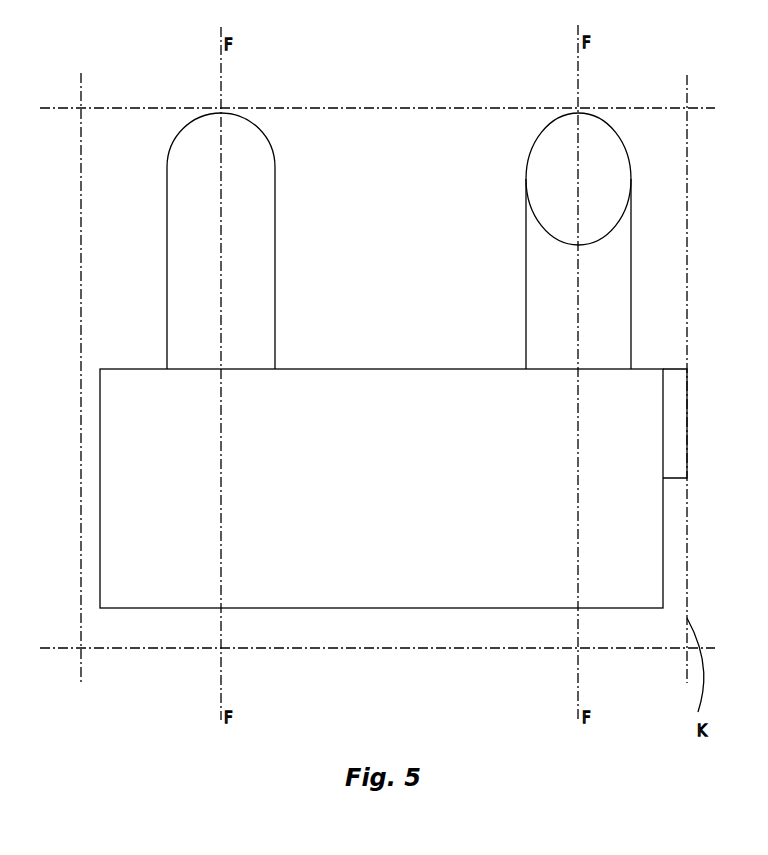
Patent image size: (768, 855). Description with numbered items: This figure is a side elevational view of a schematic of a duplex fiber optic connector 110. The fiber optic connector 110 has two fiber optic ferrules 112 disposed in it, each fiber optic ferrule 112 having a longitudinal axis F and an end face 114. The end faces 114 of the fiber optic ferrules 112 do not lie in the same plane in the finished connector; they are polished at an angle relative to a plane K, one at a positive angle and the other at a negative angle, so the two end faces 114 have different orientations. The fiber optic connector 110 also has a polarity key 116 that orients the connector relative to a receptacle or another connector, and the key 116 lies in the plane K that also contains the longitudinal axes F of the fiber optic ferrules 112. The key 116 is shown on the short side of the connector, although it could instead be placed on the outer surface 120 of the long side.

The fiber optic connector 110 is at (650, 145).
The fiber optic ferrule 112 is at (275, 274).
The end face 114 is at (536, 163).
The polarity key 116 is at (680, 423).
The outer surface of the long side 120 is at (458, 610).